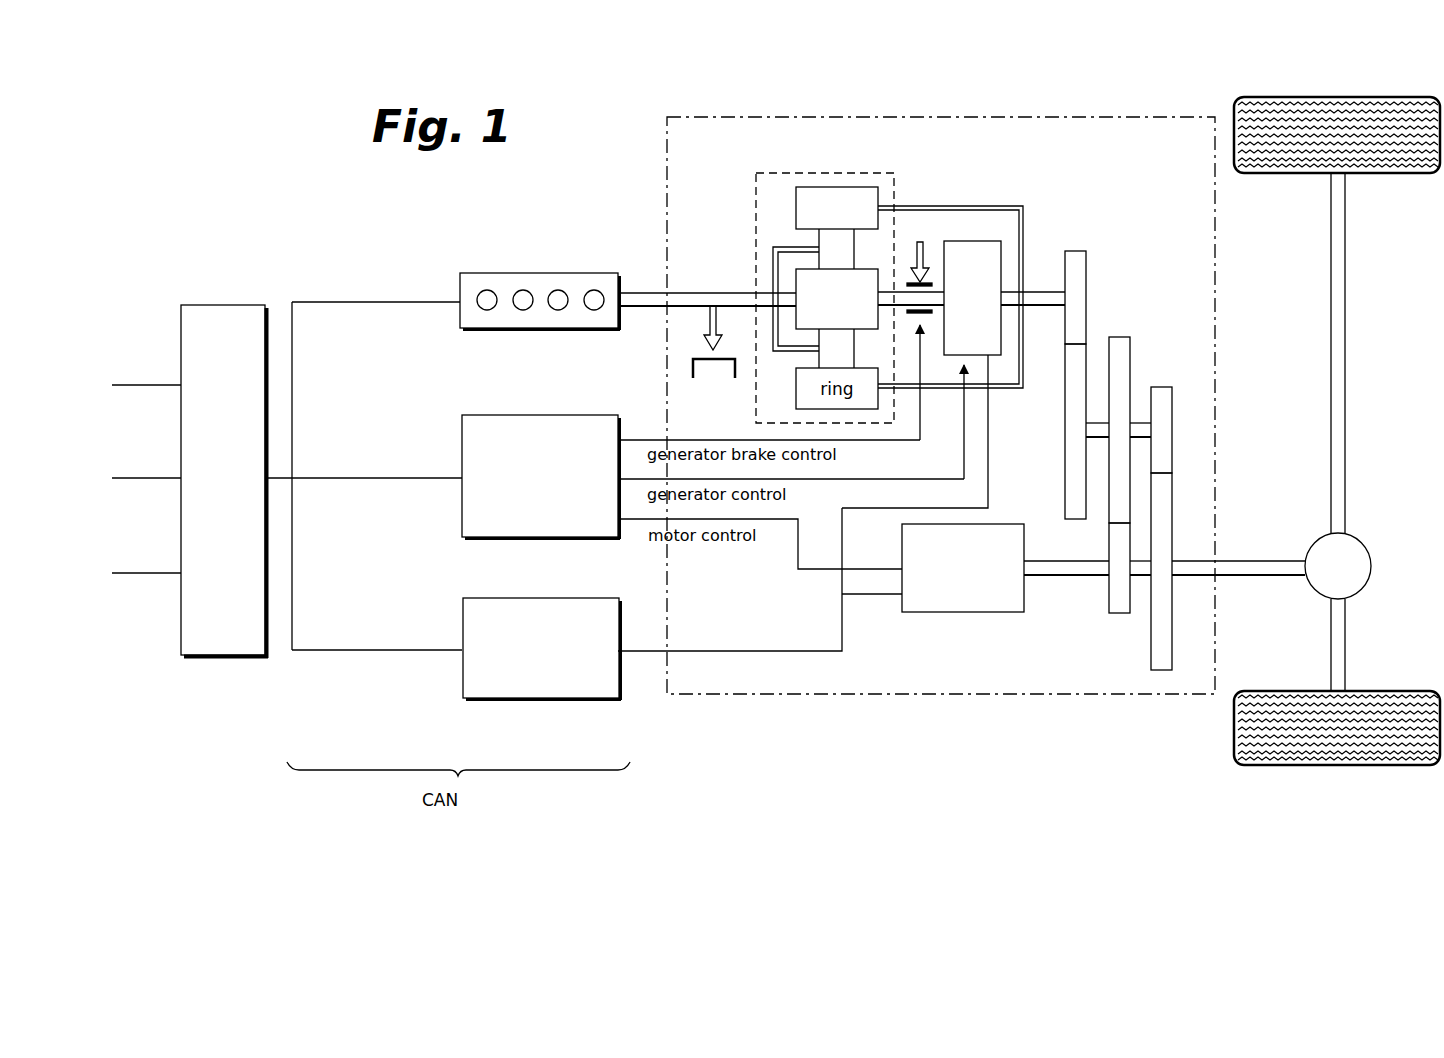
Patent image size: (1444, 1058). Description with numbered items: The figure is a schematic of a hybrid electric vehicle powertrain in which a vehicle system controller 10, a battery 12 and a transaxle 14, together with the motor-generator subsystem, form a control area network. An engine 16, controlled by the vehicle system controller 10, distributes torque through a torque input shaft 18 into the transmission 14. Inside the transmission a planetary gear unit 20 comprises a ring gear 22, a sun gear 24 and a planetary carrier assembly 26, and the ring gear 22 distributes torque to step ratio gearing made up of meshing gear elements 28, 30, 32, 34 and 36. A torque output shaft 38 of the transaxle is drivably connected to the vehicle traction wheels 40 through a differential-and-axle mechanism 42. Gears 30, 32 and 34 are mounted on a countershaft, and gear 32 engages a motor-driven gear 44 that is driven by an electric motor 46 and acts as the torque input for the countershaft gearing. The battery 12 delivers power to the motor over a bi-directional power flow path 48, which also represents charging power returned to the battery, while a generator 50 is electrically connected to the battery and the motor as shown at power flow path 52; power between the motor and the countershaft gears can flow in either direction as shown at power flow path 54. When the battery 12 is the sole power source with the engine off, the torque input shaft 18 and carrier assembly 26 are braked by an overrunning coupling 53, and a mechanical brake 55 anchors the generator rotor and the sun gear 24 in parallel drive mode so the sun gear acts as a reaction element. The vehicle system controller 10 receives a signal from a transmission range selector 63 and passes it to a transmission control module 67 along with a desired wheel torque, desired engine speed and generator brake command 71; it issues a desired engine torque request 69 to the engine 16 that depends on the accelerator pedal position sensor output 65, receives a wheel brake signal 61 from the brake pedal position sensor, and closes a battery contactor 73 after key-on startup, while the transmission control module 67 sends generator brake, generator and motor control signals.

The vehicle system controller 10 is at (232, 305).
The battery 12 is at (560, 698).
The transaxle 14 is at (777, 694).
The engine 16 is at (595, 273).
The torque input shaft 18 is at (655, 308).
The planetary gear unit 20 is at (905, 185).
The ring gear 22 is at (796, 207).
The sun gear 24 is at (796, 282).
The planetary carrier assembly 26 is at (775, 257).
The gear element 28 is at (1086, 272).
The gear element 30 is at (1065, 470).
The gear element 32 is at (1130, 357).
The gear element 34 is at (1172, 405).
The gear element 36 is at (1172, 515).
The torque output shaft 38 is at (1278, 577).
The vehicle traction wheels 40 is at (1375, 97).
The differential-and-axle mechanism 42 is at (1360, 566).
The motor-driven gear 44 is at (1118, 613).
The electric motor 46 is at (965, 612).
The power flow path 48 is at (820, 650).
The generator 50 is at (1001, 252).
The power flow path 52 is at (855, 508).
The overrunning coupling 53 is at (705, 323).
The power flow path 54 is at (886, 598).
The mechanical brake 55 is at (925, 252).
The wheel brake signal 61 is at (160, 573).
The transmission range selector 63 is at (160, 385).
The accelerator pedal position sensor output 65 is at (160, 478).
The transmission control module 67 is at (497, 415).
The desired engine torque request 69 is at (370, 302).
The desired wheel torque, desired engine speed and generator brake command 71 is at (372, 478).
The battery contactor 73 is at (372, 650).